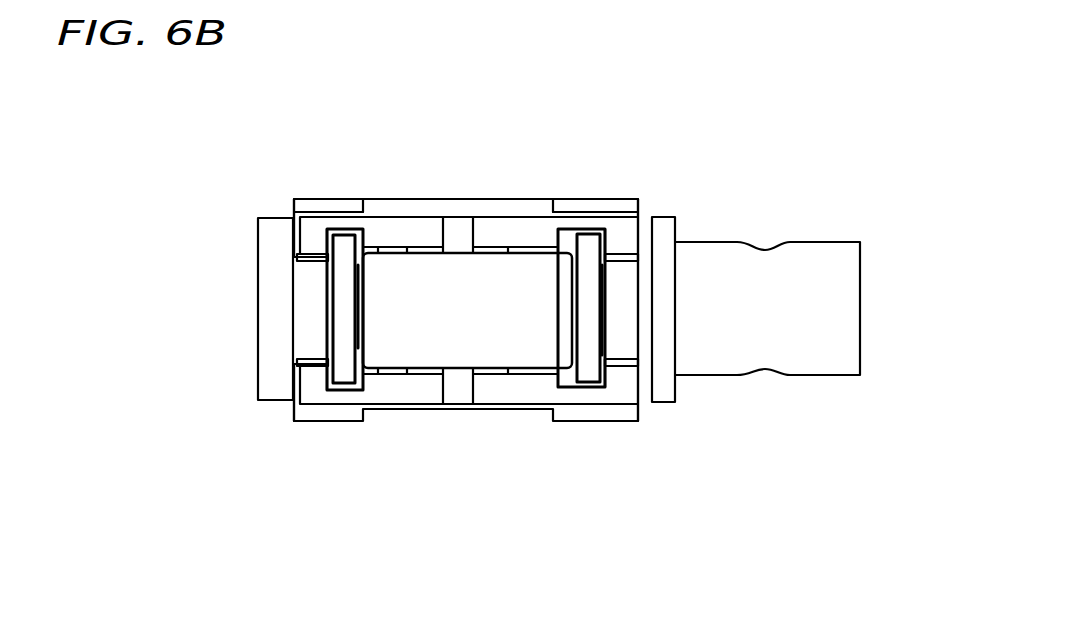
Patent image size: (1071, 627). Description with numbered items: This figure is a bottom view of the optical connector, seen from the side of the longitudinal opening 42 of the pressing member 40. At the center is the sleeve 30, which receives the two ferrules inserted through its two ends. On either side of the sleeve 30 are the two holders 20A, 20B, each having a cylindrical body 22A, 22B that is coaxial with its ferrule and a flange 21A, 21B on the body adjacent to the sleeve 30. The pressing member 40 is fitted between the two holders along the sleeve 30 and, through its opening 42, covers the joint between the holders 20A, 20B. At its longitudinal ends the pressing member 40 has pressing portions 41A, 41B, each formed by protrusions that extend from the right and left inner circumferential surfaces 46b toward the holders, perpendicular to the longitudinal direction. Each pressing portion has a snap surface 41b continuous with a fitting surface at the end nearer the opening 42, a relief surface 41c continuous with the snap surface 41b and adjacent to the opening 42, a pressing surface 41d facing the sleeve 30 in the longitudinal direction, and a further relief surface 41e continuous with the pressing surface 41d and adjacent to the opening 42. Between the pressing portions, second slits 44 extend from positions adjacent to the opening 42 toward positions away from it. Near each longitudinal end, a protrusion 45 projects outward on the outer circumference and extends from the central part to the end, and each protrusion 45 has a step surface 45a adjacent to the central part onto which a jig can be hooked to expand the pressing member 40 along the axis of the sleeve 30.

The holder 20A is at (275, 235).
The holder 20B is at (698, 287).
The flange 21A is at (345, 315).
The flange 21B is at (586, 320).
The body 22A is at (297, 248).
The body 22B is at (638, 250).
The sleeve 30 is at (507, 317).
The pressing member 40 is at (402, 382).
The pressing portion 41A is at (296, 256).
The pressing portion 41B is at (607, 368).
The snap surface 41b is at (335, 352).
The relief surface 41c is at (332, 357).
The pressing surface 41d is at (300, 362).
The relief surface 41e is at (330, 365).
The opening 42 is at (433, 315).
The second slit 44 is at (458, 232).
The protrusion 45 is at (600, 205).
The step surface 45a is at (557, 200).
The inner circumferential surface 46b is at (587, 240).